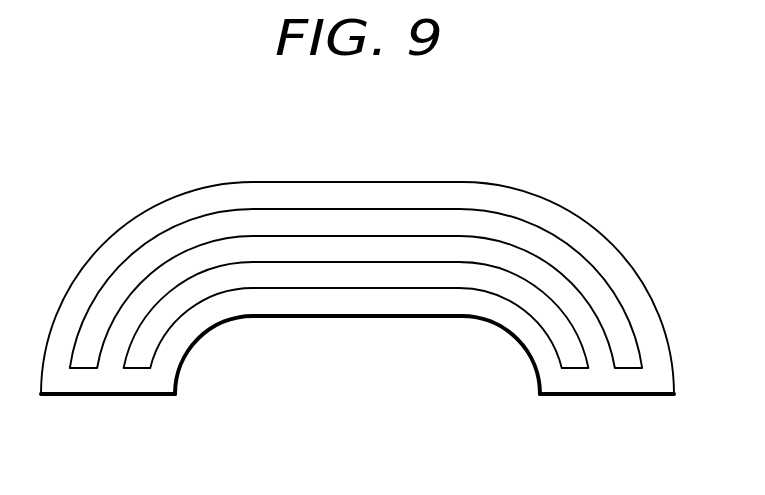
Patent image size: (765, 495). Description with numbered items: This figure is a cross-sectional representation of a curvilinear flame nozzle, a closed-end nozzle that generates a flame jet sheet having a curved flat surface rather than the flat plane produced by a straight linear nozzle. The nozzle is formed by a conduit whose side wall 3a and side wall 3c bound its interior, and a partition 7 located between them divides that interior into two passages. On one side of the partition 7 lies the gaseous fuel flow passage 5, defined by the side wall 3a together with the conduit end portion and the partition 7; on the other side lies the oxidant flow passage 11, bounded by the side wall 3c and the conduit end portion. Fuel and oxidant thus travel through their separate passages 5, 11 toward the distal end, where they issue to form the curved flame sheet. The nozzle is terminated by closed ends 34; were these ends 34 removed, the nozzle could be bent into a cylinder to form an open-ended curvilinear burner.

The side wall 3a is at (210, 186).
The side wall 3c is at (293, 320).
The gaseous fuel flow passage 5 is at (345, 222).
The partition 7 is at (518, 257).
The oxidant flow passage 11 is at (555, 327).
The closed ends 34 is at (108, 396).